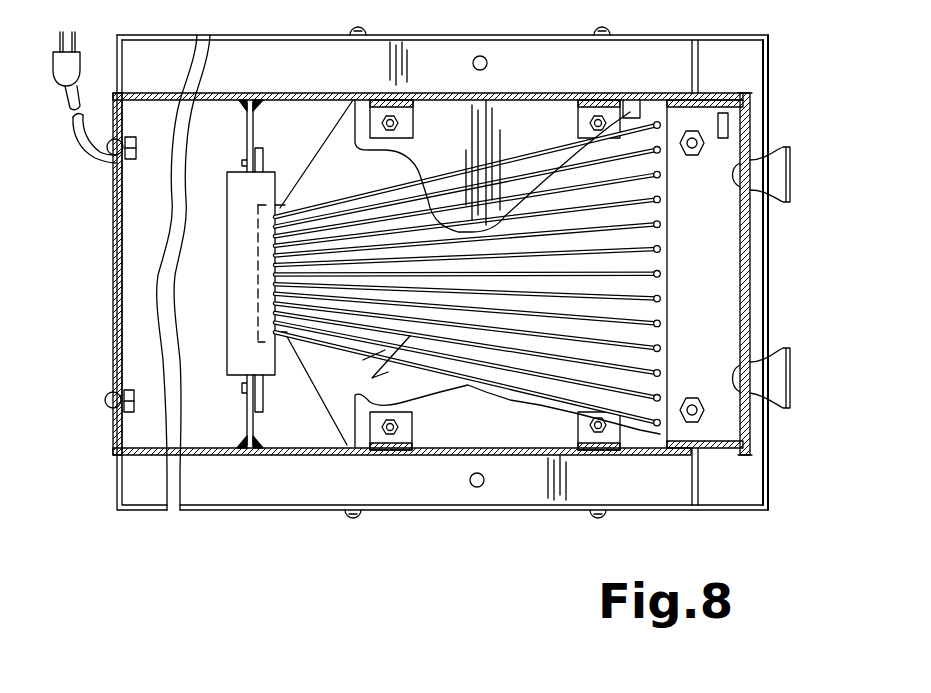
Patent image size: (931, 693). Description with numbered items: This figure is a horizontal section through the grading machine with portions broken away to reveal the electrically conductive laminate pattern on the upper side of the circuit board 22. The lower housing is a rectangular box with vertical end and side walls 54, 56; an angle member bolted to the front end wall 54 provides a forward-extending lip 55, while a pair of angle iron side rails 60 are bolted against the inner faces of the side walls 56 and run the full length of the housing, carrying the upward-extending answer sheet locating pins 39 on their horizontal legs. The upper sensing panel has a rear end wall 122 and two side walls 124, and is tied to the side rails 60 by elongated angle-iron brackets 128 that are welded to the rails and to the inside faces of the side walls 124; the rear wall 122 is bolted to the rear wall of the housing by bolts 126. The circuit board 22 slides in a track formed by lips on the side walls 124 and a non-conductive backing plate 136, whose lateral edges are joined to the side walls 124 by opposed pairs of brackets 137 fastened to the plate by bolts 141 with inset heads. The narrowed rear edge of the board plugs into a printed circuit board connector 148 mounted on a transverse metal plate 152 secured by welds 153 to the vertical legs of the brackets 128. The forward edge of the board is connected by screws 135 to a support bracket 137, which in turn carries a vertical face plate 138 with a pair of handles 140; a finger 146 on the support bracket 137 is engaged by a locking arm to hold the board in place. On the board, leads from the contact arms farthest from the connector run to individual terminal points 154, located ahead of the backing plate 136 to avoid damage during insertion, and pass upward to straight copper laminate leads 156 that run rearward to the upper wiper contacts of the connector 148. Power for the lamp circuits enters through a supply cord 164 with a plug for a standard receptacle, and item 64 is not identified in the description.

The circuit board 22 is at (498, 272).
The answer sheet locating pins 39 is at (487, 64).
The end wall 54 is at (123, 258).
The forward-extending lip 55 is at (756, 77).
The side wall 56 is at (538, 42).
The angle iron side rails 60 is at (620, 76).
The screw 64 is at (602, 33).
The rear end wall 122 is at (112, 341).
The side walls 124 is at (273, 93).
The bolts 126 is at (110, 160).
The angle-iron brackets 128 is at (298, 102).
The screws 135 is at (698, 400).
The backing plate 136 is at (517, 431).
The brackets 137 is at (383, 98).
The face plate 138 is at (751, 301).
The handles 140 is at (791, 170).
The bolts 141 is at (395, 123).
The finger 146 is at (723, 125).
The printed circuit board connector 148 is at (238, 331).
The transverse metal plate 152 is at (248, 418).
The welds 153 is at (243, 107).
The terminal points 154 is at (665, 251).
The straight leads 156 is at (374, 361).
The supply cord 164 is at (80, 143).